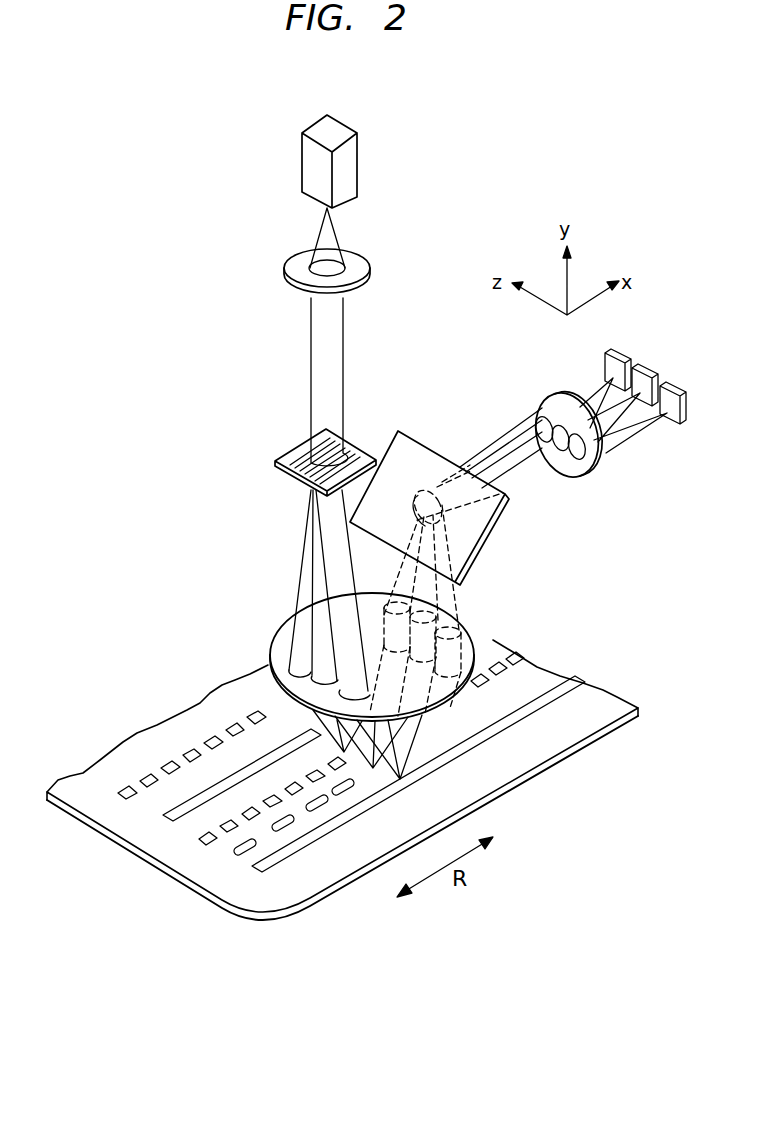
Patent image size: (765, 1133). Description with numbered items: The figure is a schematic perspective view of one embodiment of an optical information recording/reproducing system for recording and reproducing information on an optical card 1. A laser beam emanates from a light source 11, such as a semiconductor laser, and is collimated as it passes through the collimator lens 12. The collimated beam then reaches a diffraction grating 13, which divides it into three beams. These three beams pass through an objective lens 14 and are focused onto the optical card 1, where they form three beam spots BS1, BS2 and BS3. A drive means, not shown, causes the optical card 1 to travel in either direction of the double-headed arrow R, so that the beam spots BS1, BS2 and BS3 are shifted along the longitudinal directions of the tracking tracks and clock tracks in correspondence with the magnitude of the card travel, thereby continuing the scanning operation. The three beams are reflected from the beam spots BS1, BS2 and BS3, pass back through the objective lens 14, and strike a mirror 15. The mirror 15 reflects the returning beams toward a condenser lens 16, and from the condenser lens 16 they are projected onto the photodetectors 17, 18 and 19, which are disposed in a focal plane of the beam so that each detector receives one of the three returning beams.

The optical card 1 is at (530, 756).
The light source 11 is at (350, 173).
The collimator lens 12 is at (358, 270).
The diffraction grating 13 is at (285, 455).
The objective lens 14 is at (287, 640).
The mirror 15 is at (492, 532).
The condenser lens 16 is at (587, 463).
The photodetector 17 is at (681, 394).
The photodetector 18 is at (652, 375).
The photodetector 19 is at (625, 357).
The beam spot BS1 is at (344, 752).
The beam spot BS2 is at (373, 768).
The beam spot BS3 is at (400, 779).